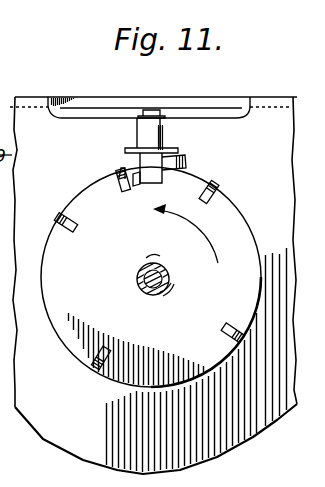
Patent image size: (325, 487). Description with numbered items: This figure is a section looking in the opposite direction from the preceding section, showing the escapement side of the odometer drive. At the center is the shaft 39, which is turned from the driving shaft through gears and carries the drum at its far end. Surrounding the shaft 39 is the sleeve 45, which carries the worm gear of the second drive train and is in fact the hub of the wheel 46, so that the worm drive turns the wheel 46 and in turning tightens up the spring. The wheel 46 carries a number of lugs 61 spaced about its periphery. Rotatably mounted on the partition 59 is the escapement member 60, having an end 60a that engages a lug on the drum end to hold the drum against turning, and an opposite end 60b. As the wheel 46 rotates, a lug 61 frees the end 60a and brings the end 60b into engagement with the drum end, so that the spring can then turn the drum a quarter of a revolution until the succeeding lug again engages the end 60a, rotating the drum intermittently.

The shaft 39 is at (142, 276).
The sleeve 45 is at (139, 294).
The wheel 46 is at (78, 198).
The partition 59 is at (247, 438).
The escapement member 60 is at (172, 153).
The end of escapement mechanism 60a is at (186, 167).
The end of escapement mechanism 60b is at (115, 183).
The lugs 61 is at (71, 232).